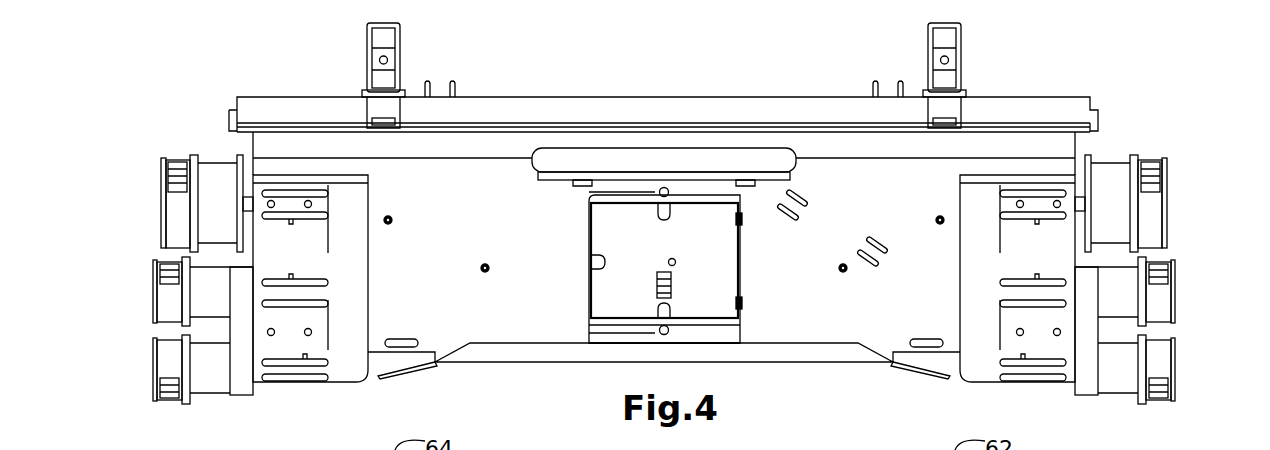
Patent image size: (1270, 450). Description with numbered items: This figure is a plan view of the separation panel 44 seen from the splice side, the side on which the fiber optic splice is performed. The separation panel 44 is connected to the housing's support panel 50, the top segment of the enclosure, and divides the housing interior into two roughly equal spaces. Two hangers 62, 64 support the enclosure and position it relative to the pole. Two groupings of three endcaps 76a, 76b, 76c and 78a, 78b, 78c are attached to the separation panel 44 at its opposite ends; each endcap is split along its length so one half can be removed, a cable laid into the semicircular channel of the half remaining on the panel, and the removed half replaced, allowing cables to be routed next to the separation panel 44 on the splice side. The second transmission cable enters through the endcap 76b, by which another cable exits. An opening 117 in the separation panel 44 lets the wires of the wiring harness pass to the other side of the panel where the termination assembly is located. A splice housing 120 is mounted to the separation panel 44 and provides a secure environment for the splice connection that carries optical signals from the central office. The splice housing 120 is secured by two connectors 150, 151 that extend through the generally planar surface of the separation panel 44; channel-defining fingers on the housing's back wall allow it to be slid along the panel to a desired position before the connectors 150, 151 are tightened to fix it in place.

The separation panel 44 is at (792, 323).
The support panel 50 is at (561, 102).
The hanger 62 is at (381, 39).
The hanger 64 is at (942, 40).
The endcap 76a is at (213, 208).
The endcap 76b is at (202, 297).
The endcap 76c is at (210, 370).
The endcap 78a is at (1111, 195).
The endcap 78b is at (1122, 298).
The endcap 78c is at (1122, 370).
The opening 117 is at (532, 167).
The splice housing 120 is at (713, 255).
The connector 150 is at (668, 187).
The connector 151 is at (664, 336).